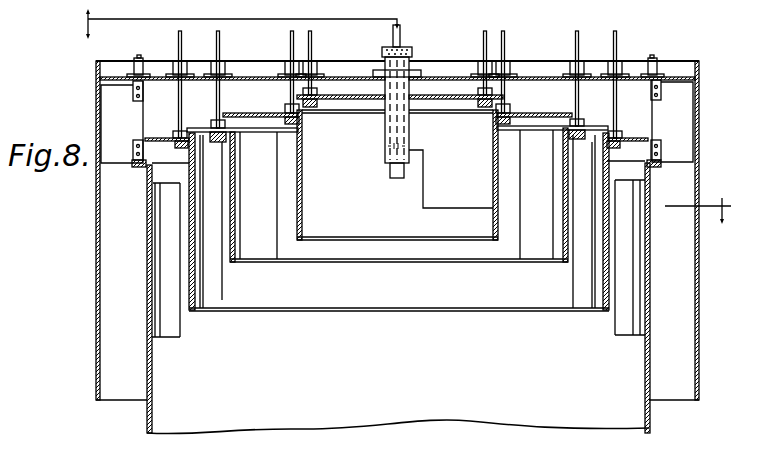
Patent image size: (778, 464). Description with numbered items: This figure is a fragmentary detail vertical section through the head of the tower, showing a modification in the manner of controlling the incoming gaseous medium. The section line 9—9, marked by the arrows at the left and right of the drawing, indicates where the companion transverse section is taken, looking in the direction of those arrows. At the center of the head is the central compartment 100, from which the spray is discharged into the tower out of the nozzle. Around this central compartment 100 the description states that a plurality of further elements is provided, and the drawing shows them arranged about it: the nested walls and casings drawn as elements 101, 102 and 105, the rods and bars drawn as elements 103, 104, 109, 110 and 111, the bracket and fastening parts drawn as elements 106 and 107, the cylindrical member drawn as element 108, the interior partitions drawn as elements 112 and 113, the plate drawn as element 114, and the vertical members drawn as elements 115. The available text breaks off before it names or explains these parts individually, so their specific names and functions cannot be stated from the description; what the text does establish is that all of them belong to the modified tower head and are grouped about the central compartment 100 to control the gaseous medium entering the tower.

The section line 9— 9 is at (402, 116).
The central compartment 100 is at (373, 238).
The intermediate casings 101 is at (606, 309).
The inner wall 102 is at (649, 416).
The suspension rods 103 is at (196, 60).
The supporting bar 104 is at (291, 96).
The outer casing 105 is at (700, 353).
The bracket 106 is at (142, 121).
The bolt and nut 107 is at (127, 157).
The thermostat cylinder 108 is at (378, 99).
The cross bar 109 is at (276, 116).
The supporting bar 110 is at (195, 128).
The supporting bar 111 is at (158, 138).
The partition 112 is at (263, 132).
The partition 113 is at (214, 141).
The top plate 114 is at (398, 173).
The heating elements 115 is at (250, 262).